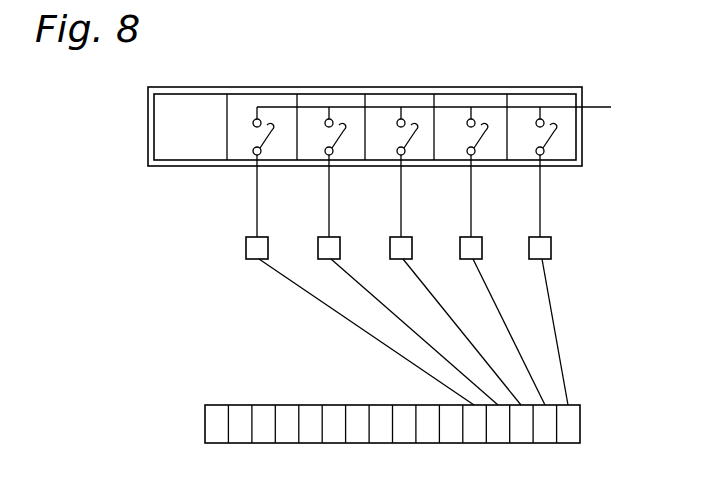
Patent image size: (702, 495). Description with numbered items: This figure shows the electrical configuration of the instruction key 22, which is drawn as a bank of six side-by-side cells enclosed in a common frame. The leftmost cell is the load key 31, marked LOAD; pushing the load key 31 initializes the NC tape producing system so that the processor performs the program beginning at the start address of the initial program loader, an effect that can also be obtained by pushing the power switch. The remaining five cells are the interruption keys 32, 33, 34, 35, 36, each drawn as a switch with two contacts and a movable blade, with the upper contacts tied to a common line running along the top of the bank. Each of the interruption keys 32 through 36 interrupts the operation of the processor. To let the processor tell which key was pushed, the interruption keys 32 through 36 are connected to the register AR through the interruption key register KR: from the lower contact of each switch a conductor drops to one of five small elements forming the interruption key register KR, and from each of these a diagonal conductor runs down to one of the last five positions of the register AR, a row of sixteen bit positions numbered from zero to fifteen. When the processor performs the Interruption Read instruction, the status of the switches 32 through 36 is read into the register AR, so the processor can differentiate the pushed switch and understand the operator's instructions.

The instruction key 22 is at (148, 137).
The load key 31 is at (188, 100).
The interruption key 32 is at (253, 100).
The interruption key 33 is at (317, 100).
The interruption key 34 is at (385, 100).
The interruption key 35 is at (458, 100).
The interruption key 36 is at (527, 100).
The interruption key register KR is at (552, 240).
The register AR is at (580, 405).